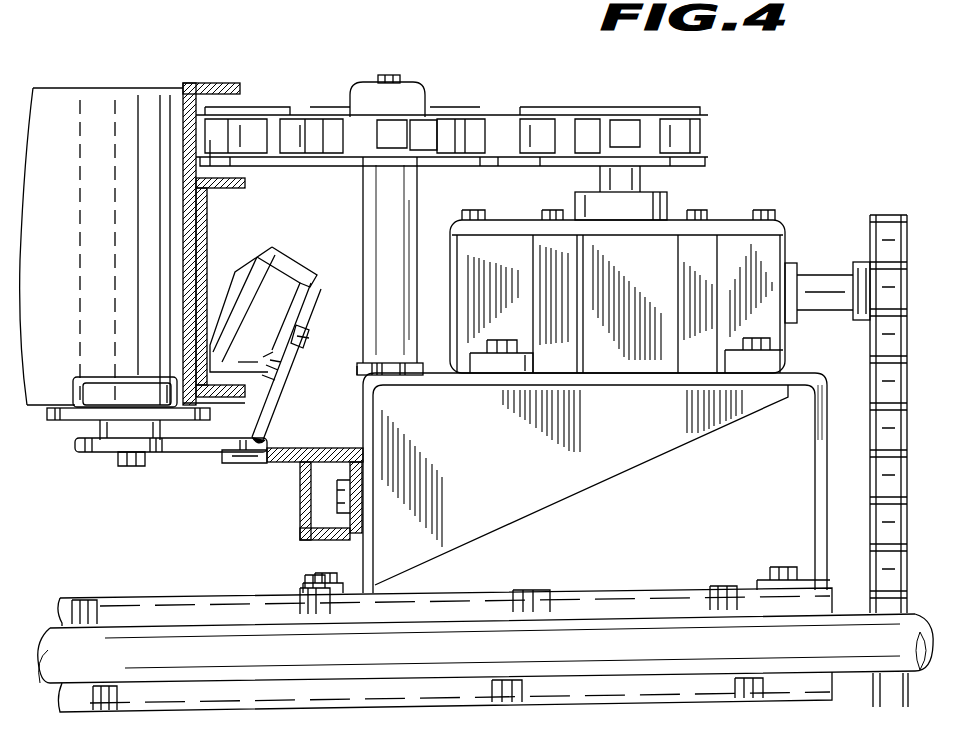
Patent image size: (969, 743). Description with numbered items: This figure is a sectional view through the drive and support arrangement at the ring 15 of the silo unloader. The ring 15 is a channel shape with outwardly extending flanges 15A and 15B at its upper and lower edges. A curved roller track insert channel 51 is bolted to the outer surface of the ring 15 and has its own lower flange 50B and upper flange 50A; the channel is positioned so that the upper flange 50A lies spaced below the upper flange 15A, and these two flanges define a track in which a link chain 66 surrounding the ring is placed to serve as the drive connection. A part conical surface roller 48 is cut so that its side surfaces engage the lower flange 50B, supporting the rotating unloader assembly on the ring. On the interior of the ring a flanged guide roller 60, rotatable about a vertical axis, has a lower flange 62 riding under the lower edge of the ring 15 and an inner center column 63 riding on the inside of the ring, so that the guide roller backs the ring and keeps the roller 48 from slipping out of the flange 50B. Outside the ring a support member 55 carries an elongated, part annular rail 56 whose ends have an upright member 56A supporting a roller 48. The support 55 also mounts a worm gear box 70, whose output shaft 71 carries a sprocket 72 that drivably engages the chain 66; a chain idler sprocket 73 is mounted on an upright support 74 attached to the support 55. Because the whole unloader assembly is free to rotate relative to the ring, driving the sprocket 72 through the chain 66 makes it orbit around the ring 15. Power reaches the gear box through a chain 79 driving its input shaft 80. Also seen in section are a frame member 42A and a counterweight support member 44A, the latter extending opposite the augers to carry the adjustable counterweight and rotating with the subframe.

The ring 15 is at (110, 108).
The upper flange of ring 15A is at (262, 50).
The lower flange of ring 15B is at (233, 417).
The part conical surface roller 48 is at (280, 272).
The upper flange of roller track insert channel 50A is at (243, 183).
The lower flange of roller track insert channel 50B is at (246, 388).
The roller track insert channel 51 is at (207, 228).
The support member 55 is at (818, 507).
The rail 56 is at (242, 467).
The upright member 56A is at (300, 365).
The flanged guide roller 60 is at (127, 363).
The lower flange of guide roller 62 is at (62, 421).
The inner center column 63 is at (153, 393).
The link chain 66 is at (297, 107).
The worm gear box 70 is at (785, 252).
The output shaft of gear box 71 is at (597, 172).
The sprocket 72 is at (617, 135).
The chain idler sprocket 73 is at (428, 135).
The upright support 74 is at (378, 280).
The chain 79 is at (890, 473).
The input shaft of gear box 80 is at (825, 300).
The cross tube 42A is at (363, 697).
The counterweight support member 44A is at (858, 662).